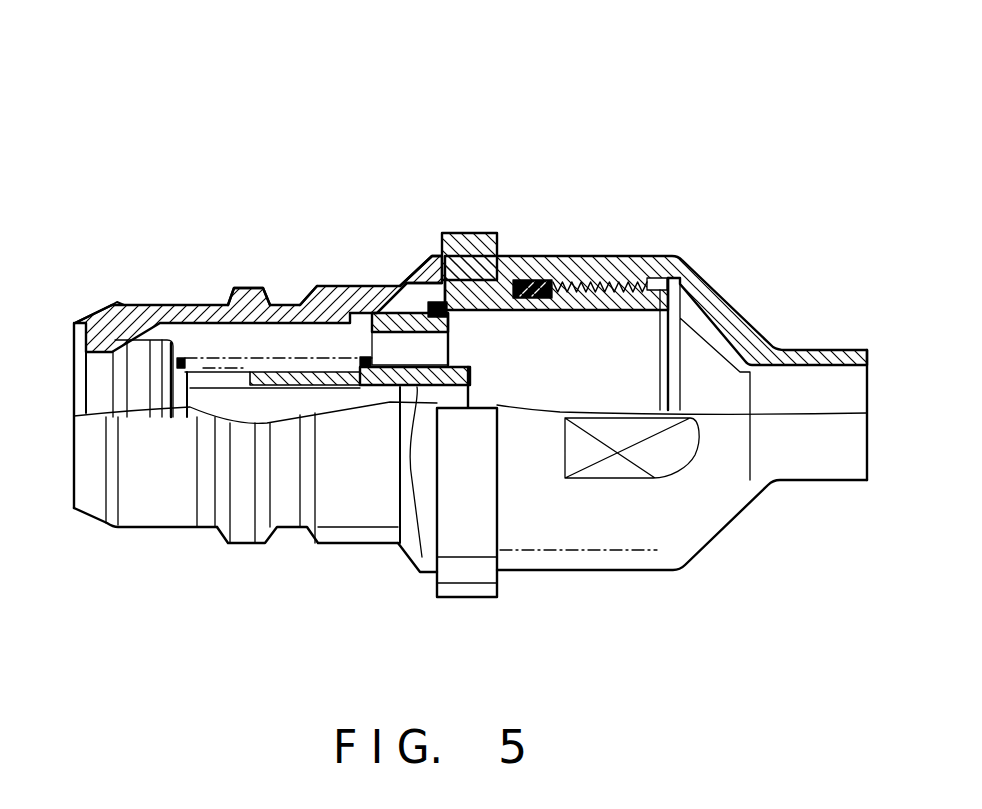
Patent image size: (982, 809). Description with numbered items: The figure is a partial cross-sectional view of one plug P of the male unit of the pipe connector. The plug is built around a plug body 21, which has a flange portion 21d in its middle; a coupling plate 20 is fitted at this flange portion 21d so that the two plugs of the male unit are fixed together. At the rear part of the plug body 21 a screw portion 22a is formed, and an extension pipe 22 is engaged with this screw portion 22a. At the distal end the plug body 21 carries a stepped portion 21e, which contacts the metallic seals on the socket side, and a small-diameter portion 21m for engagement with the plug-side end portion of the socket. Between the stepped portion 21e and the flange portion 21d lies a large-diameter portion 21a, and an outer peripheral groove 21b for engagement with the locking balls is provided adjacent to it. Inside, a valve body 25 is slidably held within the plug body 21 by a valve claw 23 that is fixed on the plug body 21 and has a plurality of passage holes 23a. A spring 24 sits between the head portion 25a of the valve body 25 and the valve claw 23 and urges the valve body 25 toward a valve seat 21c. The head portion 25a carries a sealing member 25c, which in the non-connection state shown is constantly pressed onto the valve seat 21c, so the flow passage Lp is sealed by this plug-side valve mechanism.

The coupling plate 20 is at (473, 242).
The plug body 21 is at (168, 308).
The large-diameter portion 21a is at (243, 293).
The outer peripheral groove 21b is at (293, 300).
The valve seat 21c is at (140, 330).
The flange portion 21d is at (422, 258).
The stepped portion 21e is at (113, 308).
The small-diameter portion 21m is at (193, 513).
The extension pipe 22 is at (720, 320).
The screw portion 22a is at (607, 275).
The valve claw 23 is at (468, 372).
The passage holes 23a is at (385, 347).
The spring 24 is at (212, 357).
The valve body 25 is at (210, 400).
The head portion 25a is at (157, 402).
The sealing member 25c is at (135, 390).
The plug P is at (484, 132).
The flow passage Lp is at (557, 388).